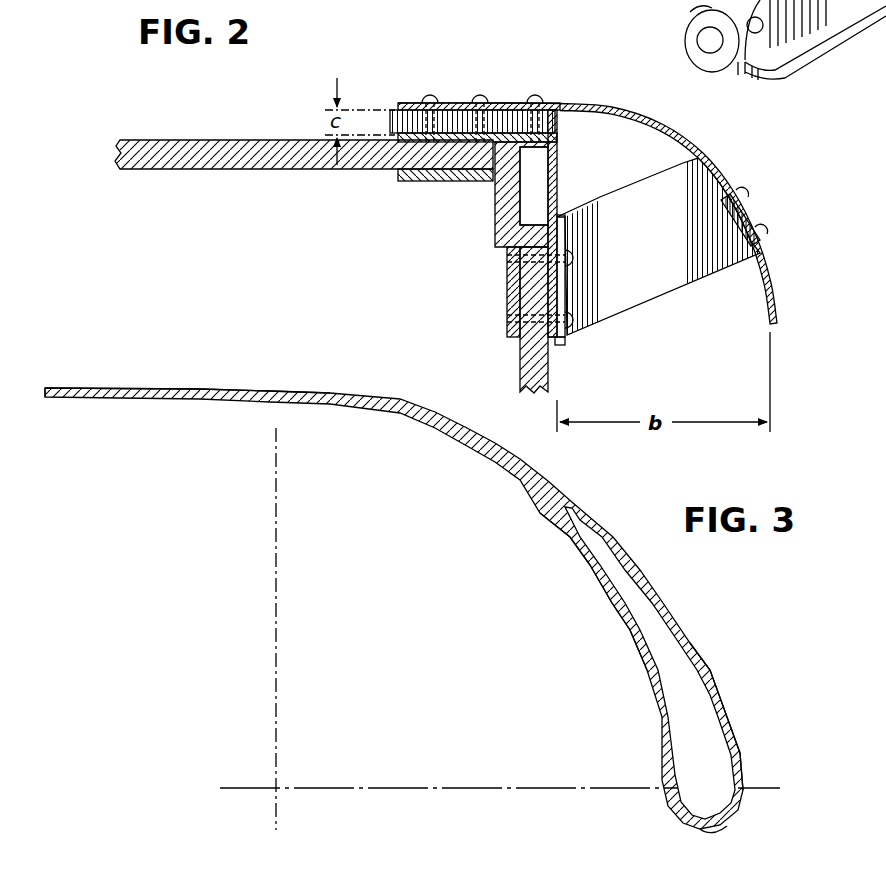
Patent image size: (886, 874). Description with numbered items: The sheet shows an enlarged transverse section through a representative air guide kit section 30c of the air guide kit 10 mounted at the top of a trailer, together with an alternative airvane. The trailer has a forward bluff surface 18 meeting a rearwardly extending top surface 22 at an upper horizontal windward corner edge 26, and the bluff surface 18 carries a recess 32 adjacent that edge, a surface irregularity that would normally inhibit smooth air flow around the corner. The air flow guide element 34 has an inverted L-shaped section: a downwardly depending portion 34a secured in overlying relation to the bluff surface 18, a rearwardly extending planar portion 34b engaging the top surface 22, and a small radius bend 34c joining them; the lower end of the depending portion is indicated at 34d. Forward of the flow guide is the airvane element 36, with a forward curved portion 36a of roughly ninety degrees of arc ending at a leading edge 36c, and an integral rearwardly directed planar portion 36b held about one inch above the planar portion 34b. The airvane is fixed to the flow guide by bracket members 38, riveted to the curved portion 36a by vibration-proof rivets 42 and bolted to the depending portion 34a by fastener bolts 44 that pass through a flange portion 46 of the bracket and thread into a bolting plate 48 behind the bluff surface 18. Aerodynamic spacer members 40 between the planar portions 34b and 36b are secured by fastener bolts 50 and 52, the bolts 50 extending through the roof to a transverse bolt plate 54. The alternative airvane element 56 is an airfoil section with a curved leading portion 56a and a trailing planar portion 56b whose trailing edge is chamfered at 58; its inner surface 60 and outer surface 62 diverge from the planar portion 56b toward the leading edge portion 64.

In FIG. 2, the air guide kit 10 is at (680, 127).
In FIG. 2, the bluff surface 18 is at (536, 365).
In FIG. 2, the top surface 22 is at (160, 140).
In FIG. 2, the upper horizontal windward corner edge 26 is at (550, 150).
In FIG. 2, the air guide kit section 30c is at (702, 142).
In FIG. 2, the recess 32 is at (532, 198).
In FIG. 2, the air flow guide element 34 is at (558, 205).
In FIG. 2, the downwardly depending portion 34a is at (561, 286).
In FIG. 2, the rearwardly extending planar portion 34b is at (457, 103).
In FIG. 2, the small radius bend 34c is at (552, 141).
In FIG. 2, the bracket lower end 34d is at (554, 347).
In FIG. 2, the airvane element 36 is at (613, 108).
In FIG. 2, the forward curved portion 36a is at (720, 175).
In FIG. 2, the rearwardly directed planar portion 36b is at (521, 103).
In FIG. 2, the leading edge 36c is at (779, 326).
In FIG. 2, the bracket member 38 is at (677, 292).
In FIG. 2, the aerodynamic spacer member 40 is at (392, 110).
In FIG. 2, the vibration-proof rivets 42 is at (764, 212).
In FIG. 2, the fastener bolts 44 is at (570, 258).
In FIG. 2, the flange portion 46 is at (561, 343).
In FIG. 2, the bolting plate 48 is at (507, 331).
In FIG. 2, the fastener bolts 50 is at (430, 95).
In FIG. 2, the fastener bolts 52 is at (545, 100).
In FIG. 2, the transverse bolt plate 54 is at (406, 181).
In FIG. 3, the airvane element 56 is at (633, 518).
In FIG. 3, the curved leading portion 56a is at (712, 672).
In FIG. 3, the trailing planar portion 56b is at (201, 389).
In FIG. 3, the chamfered trailing edge 58 is at (52, 388).
In FIG. 3, the inner surface 60 is at (546, 513).
In FIG. 3, the outer surface 62 is at (562, 481).
In FIG. 3, the leading edge portion 64 is at (716, 833).